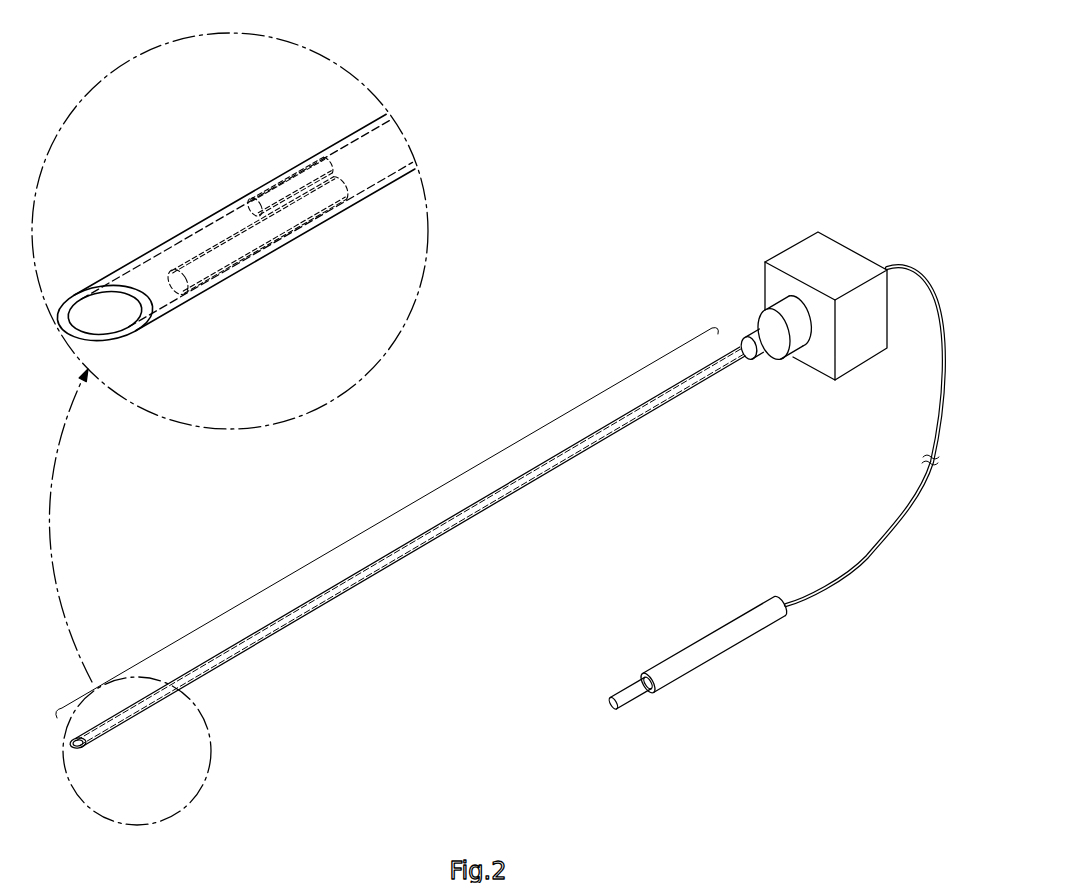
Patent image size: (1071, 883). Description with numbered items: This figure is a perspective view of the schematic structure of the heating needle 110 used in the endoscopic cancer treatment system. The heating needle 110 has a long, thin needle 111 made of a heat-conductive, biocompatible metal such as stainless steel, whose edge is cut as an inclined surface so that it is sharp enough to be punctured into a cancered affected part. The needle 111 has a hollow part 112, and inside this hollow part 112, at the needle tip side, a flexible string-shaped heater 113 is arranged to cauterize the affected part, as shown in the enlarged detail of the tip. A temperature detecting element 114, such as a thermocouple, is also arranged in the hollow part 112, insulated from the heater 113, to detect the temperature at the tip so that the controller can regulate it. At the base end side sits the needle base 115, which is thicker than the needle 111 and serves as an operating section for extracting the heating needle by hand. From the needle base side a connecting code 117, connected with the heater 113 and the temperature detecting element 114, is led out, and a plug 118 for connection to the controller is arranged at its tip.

The heating needle 110 is at (578, 124).
The needle 111 is at (390, 517).
The hollow part 112 is at (282, 628).
The heater 113 is at (263, 244).
The temperature detecting element 114 is at (290, 180).
The needle base 115 is at (838, 255).
The connecting code 117 is at (857, 567).
The plug 118 is at (692, 660).